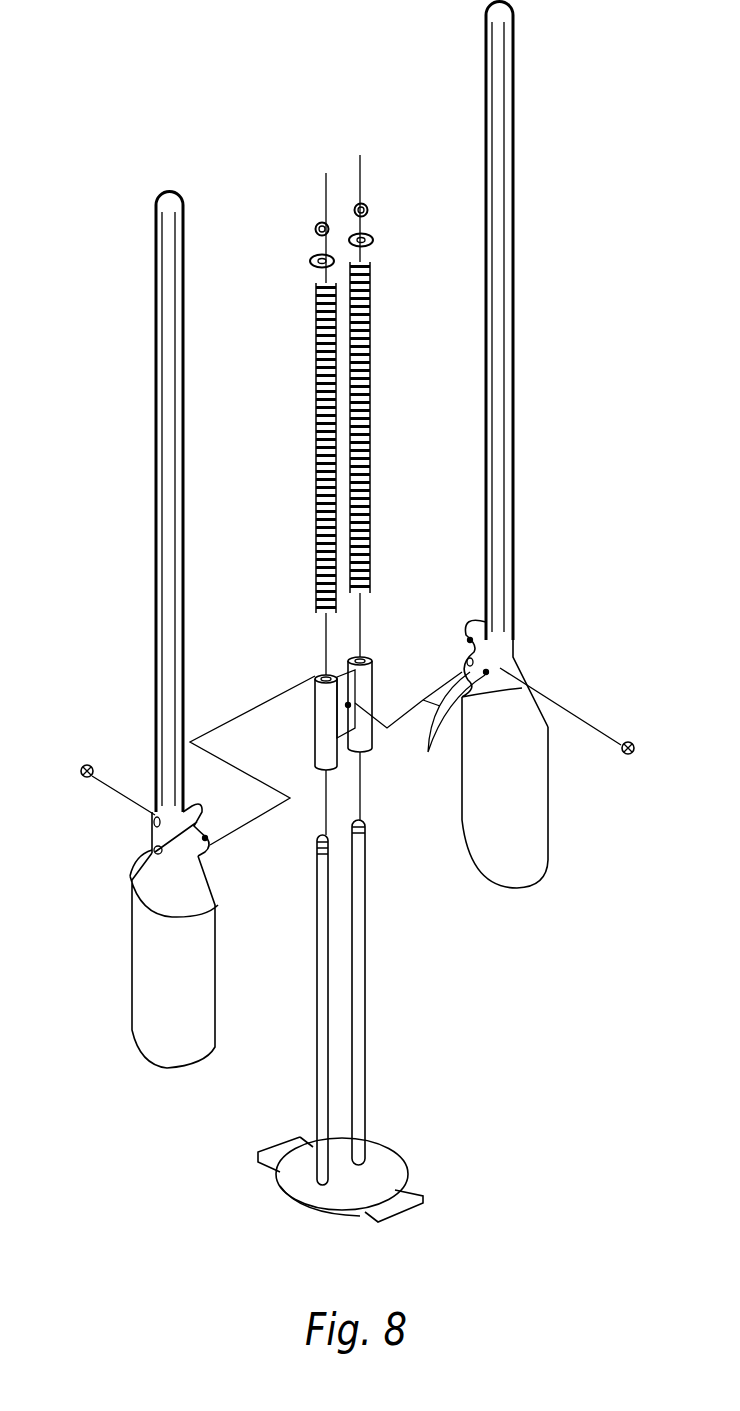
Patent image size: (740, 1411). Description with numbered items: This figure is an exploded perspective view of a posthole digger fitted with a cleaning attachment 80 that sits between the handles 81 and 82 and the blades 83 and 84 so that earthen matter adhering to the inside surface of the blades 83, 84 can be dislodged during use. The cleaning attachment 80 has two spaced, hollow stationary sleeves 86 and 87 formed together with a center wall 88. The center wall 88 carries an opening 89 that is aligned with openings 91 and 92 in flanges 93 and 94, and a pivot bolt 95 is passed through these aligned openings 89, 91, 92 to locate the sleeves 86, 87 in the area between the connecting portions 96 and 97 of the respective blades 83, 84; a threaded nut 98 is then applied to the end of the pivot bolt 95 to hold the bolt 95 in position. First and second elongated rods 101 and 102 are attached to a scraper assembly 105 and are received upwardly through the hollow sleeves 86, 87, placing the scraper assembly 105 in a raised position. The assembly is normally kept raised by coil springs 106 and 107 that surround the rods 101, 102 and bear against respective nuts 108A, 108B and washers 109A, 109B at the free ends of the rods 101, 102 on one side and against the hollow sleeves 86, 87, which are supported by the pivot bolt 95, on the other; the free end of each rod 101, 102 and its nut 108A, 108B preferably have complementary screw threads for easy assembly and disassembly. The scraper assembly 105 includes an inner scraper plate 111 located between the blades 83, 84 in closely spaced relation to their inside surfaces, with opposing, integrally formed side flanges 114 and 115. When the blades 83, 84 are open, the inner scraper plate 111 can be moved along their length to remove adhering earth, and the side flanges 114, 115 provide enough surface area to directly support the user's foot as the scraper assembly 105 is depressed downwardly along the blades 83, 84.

The cleaning attachment 80 is at (440, 295).
The handle 81 is at (162, 545).
The handle 82 is at (500, 415).
The blade 83 is at (183, 1043).
The blade 84 is at (507, 833).
The hollow stationary sleeve 86 is at (318, 722).
The hollow stationary sleeve 87 is at (367, 697).
The center wall 88 is at (343, 675).
The opening 89 is at (347, 707).
The opening 91 is at (190, 832).
The opening 92 is at (451, 727).
The flange 93 is at (152, 838).
The flange 94 is at (495, 640).
The pivot bolt 95 is at (630, 756).
The connecting portion 96 is at (155, 852).
The connecting portion 97 is at (512, 668).
The threaded nut 98 is at (84, 766).
The first elongated rod 101 is at (322, 968).
The second elongated rod 102 is at (360, 912).
The scraper assembly 105 is at (250, 1257).
The coil spring 106 is at (320, 400).
The coil spring 107 is at (370, 405).
The nut 108A is at (318, 226).
The nut 108B is at (366, 207).
The washer 109A is at (310, 262).
The washer 109B is at (373, 240).
The inner scraper plate 111 is at (370, 1176).
The side flange 114 is at (275, 1152).
The side flange 115 is at (385, 1212).